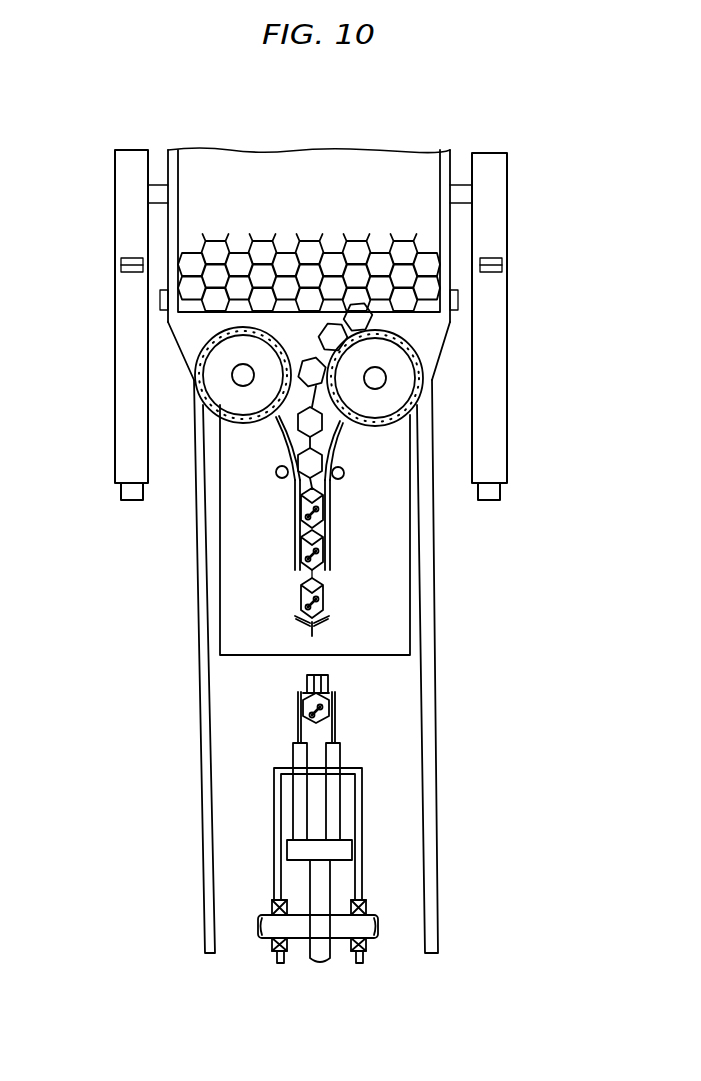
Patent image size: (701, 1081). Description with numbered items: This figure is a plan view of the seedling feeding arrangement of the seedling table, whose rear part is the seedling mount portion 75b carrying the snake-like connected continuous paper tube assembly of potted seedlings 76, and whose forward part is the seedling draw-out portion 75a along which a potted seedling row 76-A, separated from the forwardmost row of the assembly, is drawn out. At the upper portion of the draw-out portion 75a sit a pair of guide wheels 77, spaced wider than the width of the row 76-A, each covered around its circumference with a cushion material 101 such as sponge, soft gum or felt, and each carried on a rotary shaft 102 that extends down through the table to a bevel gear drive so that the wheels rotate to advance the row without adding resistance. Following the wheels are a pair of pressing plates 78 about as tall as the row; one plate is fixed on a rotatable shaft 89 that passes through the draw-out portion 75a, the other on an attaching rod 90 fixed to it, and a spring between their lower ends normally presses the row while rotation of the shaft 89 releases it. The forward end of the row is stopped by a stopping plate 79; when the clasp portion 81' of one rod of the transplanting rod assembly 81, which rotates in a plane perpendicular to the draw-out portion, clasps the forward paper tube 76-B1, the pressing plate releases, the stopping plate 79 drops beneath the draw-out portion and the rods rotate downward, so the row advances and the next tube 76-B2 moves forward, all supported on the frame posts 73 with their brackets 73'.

The support post 73 is at (312, 325).
The support bracket 73' is at (311, 185).
The seedling draw-out portion 75a is at (405, 575).
The seedling mount portion 75b is at (408, 158).
The continuous paper tube assembly of potted seedlings 76 is at (338, 246).
The potted seedling row 76-A is at (325, 500).
The forward paper tube 76-B1 is at (301, 715).
The workpiece at discharge position 76-B2 is at (324, 603).
The guide wheels 77 is at (247, 408).
The pressing plates 78 is at (293, 537).
The stopping plate 79 is at (322, 622).
The transplanting rod assembly 81 is at (321, 853).
The clasp portion 81' is at (346, 707).
The shaft 89 is at (278, 476).
The attaching rod 90 is at (343, 477).
The cushion material 101 is at (203, 353).
The rotary shafts 102 is at (232, 375).